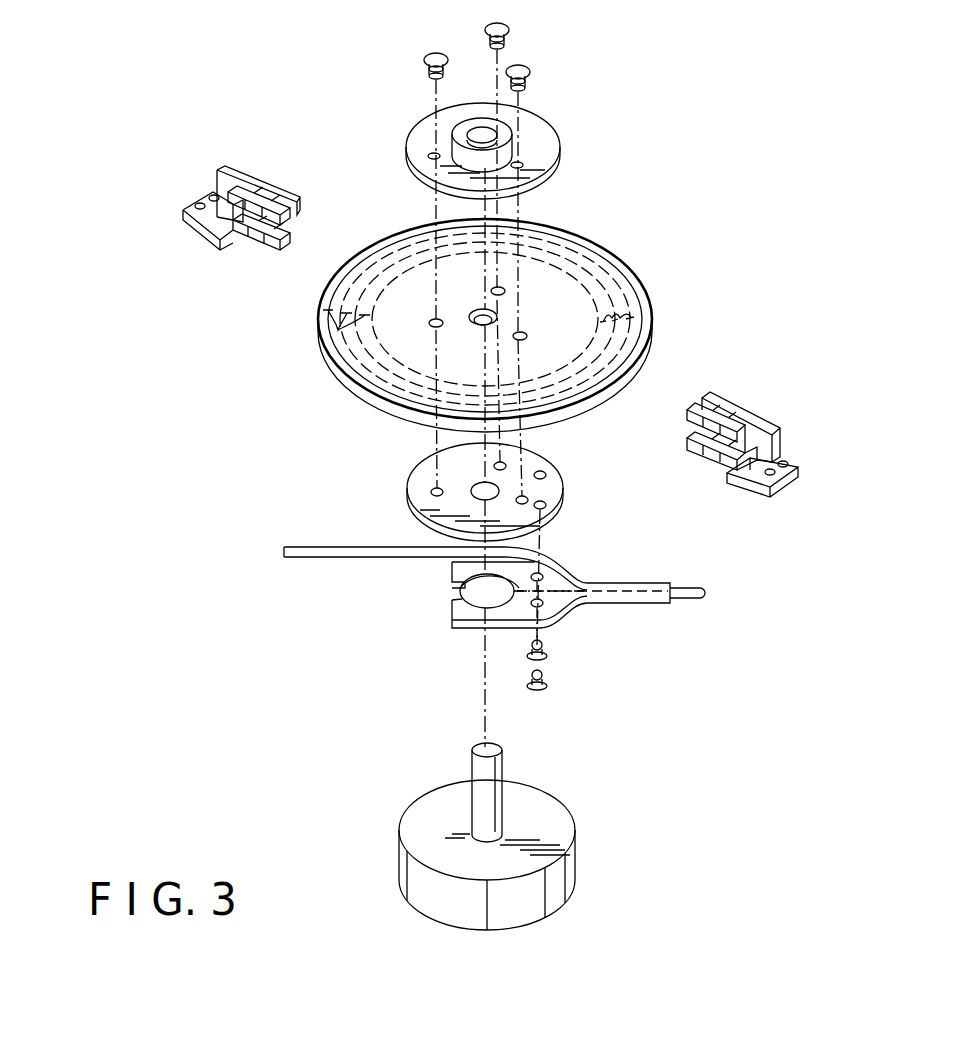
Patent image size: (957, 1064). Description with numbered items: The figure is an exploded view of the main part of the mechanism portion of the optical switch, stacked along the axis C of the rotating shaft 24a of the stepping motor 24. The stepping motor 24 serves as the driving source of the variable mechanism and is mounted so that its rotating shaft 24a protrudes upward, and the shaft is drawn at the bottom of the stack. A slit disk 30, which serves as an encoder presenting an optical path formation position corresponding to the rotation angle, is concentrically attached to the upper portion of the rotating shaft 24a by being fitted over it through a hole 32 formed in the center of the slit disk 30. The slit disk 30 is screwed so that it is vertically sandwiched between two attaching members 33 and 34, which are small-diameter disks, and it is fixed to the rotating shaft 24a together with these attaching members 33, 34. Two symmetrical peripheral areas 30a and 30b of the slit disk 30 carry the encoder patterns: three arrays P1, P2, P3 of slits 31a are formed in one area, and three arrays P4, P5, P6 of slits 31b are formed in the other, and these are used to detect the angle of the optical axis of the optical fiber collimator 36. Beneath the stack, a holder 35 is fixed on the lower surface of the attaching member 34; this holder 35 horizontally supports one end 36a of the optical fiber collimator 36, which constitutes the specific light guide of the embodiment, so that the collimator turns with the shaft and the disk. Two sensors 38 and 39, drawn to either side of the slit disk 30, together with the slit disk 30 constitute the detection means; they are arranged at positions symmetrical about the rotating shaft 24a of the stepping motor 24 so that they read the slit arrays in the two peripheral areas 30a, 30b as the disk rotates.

The stepping motor 24 is at (578, 858).
The rotating shaft 24a is at (504, 763).
The slit disk 30 is at (654, 301).
The peripheral area 30a is at (610, 405).
The peripheral area 30b is at (412, 223).
The slits 31a is at (614, 318).
The slits 31b is at (338, 330).
The hole 32 is at (480, 326).
The attaching member 33 is at (553, 127).
The attaching member 34 is at (565, 491).
The holder 35 is at (586, 606).
The optical fiber collimator 36 is at (340, 546).
The one end of the optical fiber collimator 36a is at (704, 576).
The sensor 38 is at (752, 414).
The sensor 39 is at (250, 180).
The array of slits P1 is at (387, 395).
The array of slits P2 is at (408, 378).
The array of slits P3 is at (440, 362).
The array of slits P4 is at (572, 248).
The array of slits P5 is at (586, 270).
The array of slits P6 is at (617, 268).
The axis C is at (484, 676).